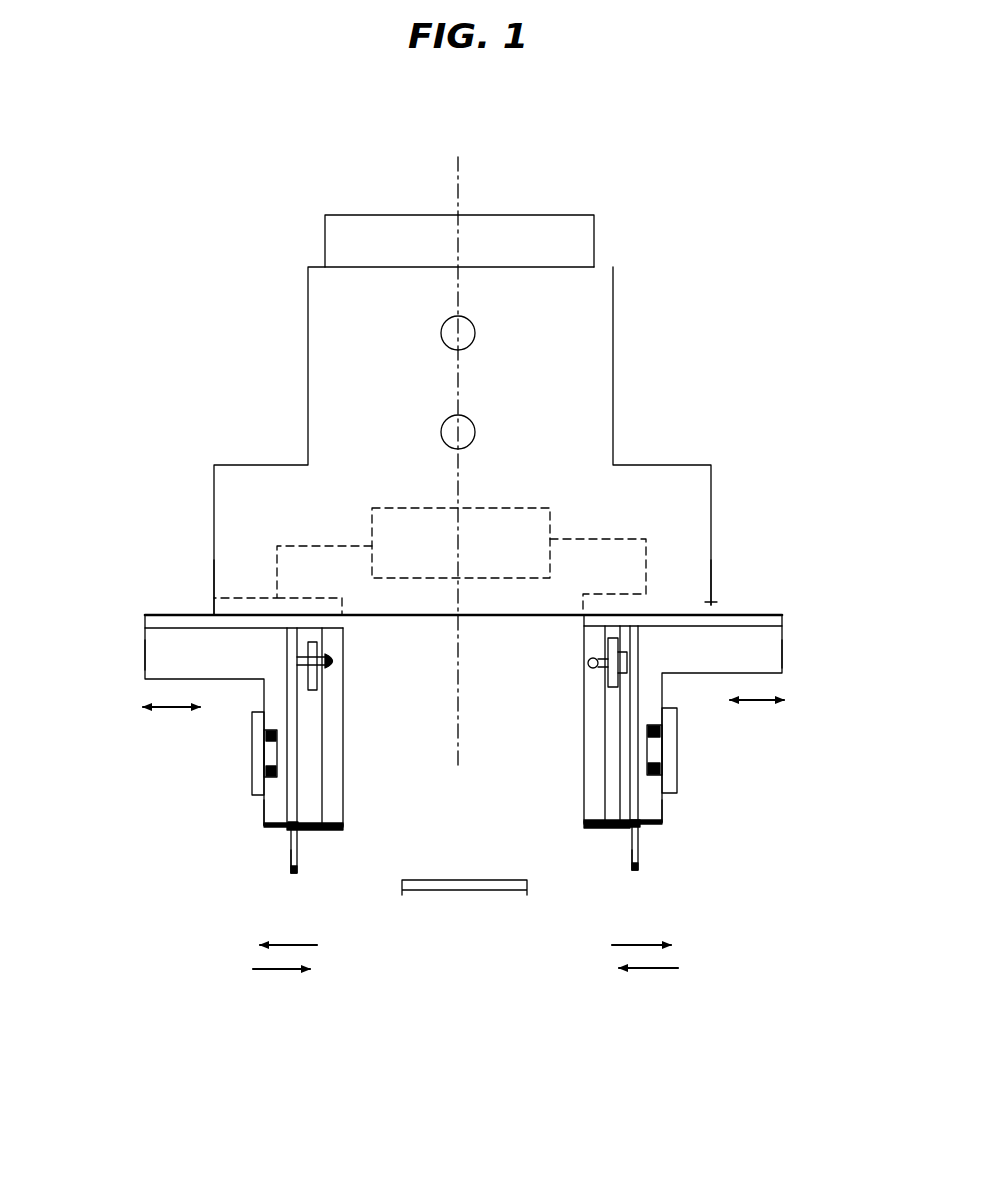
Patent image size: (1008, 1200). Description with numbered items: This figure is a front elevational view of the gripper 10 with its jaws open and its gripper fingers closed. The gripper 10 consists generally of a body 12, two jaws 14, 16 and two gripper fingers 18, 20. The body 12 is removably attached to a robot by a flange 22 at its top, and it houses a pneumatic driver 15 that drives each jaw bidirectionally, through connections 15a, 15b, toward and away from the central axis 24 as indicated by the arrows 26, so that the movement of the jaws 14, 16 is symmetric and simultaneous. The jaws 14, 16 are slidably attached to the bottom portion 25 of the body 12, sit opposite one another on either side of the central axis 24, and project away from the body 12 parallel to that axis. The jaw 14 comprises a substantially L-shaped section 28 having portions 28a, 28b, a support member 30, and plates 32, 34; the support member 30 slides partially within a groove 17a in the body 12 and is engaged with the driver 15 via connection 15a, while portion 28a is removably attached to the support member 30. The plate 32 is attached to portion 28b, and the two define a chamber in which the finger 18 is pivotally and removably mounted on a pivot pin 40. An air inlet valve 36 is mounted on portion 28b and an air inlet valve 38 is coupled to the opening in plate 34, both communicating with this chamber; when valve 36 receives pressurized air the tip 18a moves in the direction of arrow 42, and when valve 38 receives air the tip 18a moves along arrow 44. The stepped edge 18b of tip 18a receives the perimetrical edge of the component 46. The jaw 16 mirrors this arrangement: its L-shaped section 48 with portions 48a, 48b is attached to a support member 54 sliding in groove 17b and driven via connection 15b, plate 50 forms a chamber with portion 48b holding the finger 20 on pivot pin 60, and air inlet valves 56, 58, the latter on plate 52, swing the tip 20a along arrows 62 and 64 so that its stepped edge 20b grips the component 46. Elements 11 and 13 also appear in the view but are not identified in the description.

The gripper 10 is at (190, 280).
The upper mounting hole 11 is at (476, 333).
The body 12 is at (613, 358).
The lower mounting hole 13 is at (476, 432).
The jaw 14 is at (162, 652).
The pneumatic driver 15 is at (552, 527).
The connection 15a is at (320, 546).
The connection 15b is at (625, 539).
The jaw 16 is at (785, 630).
The groove 17a is at (212, 600).
The groove 17b is at (716, 600).
The gripper finger 18 is at (300, 860).
The finger tip 18a is at (288, 860).
The stepped edge 18b is at (297, 875).
The gripper finger 20 is at (628, 845).
The finger tip 20a is at (640, 870).
The stepped edge 20b is at (632, 868).
The flange 22 is at (595, 247).
The central axis 24 is at (460, 185).
The bottom portion 25 is at (373, 618).
The arrows 26 is at (170, 712).
The L-shaped section 28 is at (152, 682).
The portion 28a is at (145, 665).
The portion 28b is at (264, 815).
The support member 30 is at (175, 614).
The plate 32 is at (312, 828).
The plate 34 is at (343, 795).
The air inlet valve 36 is at (252, 783).
The air inlet valve 38 is at (340, 665).
The pivot pin 40 is at (287, 826).
The arrow 42 is at (300, 945).
The arrow 44 is at (278, 969).
The component 46 is at (462, 895).
The L-shaped section 48 is at (770, 676).
The portion 48a is at (785, 660).
The portion 48b is at (665, 808).
The plate 50 is at (596, 826).
The plate 52 is at (585, 760).
The support member 54 is at (785, 613).
The air inlet valve 56 is at (677, 780).
The air inlet valve 58 is at (588, 663).
The pivot pin 60 is at (642, 825).
The arrow 62 is at (622, 945).
The arrow 64 is at (660, 968).